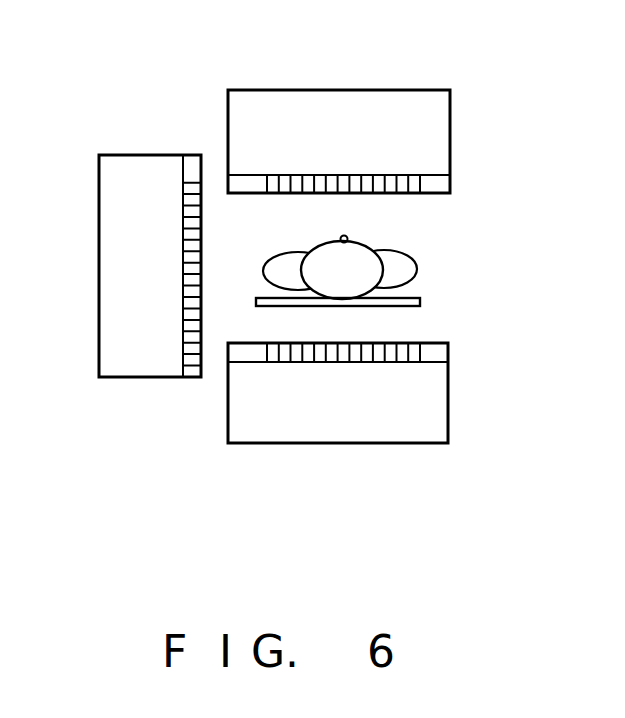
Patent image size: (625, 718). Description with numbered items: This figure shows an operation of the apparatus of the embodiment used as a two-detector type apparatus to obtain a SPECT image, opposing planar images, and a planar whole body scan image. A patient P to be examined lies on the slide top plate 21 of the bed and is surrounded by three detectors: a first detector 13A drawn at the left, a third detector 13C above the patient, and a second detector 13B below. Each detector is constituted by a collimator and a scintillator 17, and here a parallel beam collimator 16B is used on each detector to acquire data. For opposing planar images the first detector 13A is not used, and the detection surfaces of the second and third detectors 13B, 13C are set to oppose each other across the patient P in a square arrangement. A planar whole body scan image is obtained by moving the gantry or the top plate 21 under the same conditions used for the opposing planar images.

The first detector 13A is at (99, 333).
The second detector 13B is at (372, 447).
The third detector 13C is at (272, 89).
The parallel beam collimator 16B is at (404, 193).
The scintillator 17 is at (359, 107).
The patient P is at (403, 258).
The slide top plate 21 is at (409, 297).